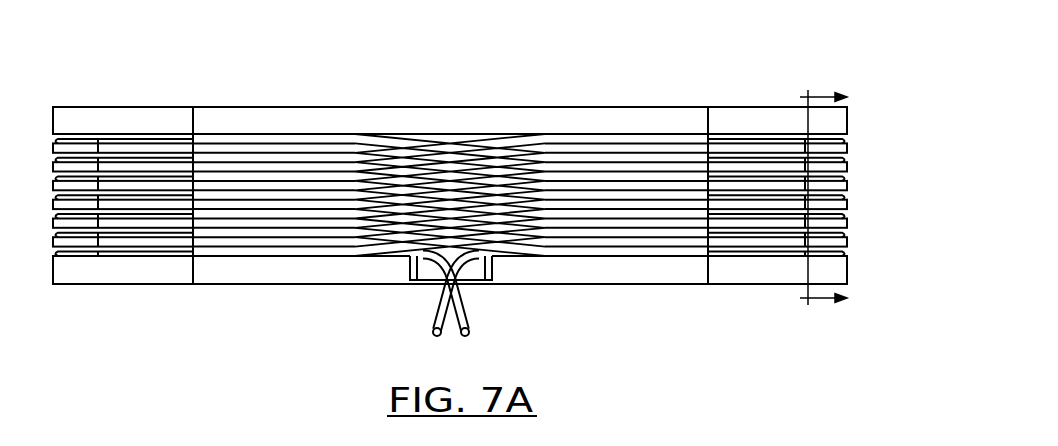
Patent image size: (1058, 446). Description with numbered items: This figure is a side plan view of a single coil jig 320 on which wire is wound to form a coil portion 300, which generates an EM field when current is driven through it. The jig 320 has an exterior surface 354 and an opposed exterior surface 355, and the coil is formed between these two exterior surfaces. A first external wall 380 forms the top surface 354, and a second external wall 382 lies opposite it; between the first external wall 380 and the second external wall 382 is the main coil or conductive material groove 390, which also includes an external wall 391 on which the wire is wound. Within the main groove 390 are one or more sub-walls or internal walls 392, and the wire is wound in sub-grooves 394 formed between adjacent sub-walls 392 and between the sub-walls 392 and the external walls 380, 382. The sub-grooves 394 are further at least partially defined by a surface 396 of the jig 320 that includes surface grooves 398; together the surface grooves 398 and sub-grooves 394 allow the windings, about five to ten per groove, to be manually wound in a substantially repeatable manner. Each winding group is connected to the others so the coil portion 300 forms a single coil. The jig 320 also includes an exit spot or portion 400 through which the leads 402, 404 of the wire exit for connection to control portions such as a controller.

The coil portion 300 is at (582, 88).
The jig 320 is at (487, 107).
The exterior surface 354 is at (287, 107).
The opposed exterior surface 355 is at (180, 285).
The first external wall 380 is at (675, 117).
The second external wall 382 is at (770, 273).
The main groove 390 is at (493, 212).
The external wall 391 is at (800, 188).
The sub-wall 392 is at (732, 243).
The sub-groove 394 is at (630, 252).
The surface 396 is at (468, 287).
The surface groove 398 is at (518, 237).
The exit portion 400 is at (408, 283).
The lead 402 is at (465, 318).
The lead 404 is at (433, 322).